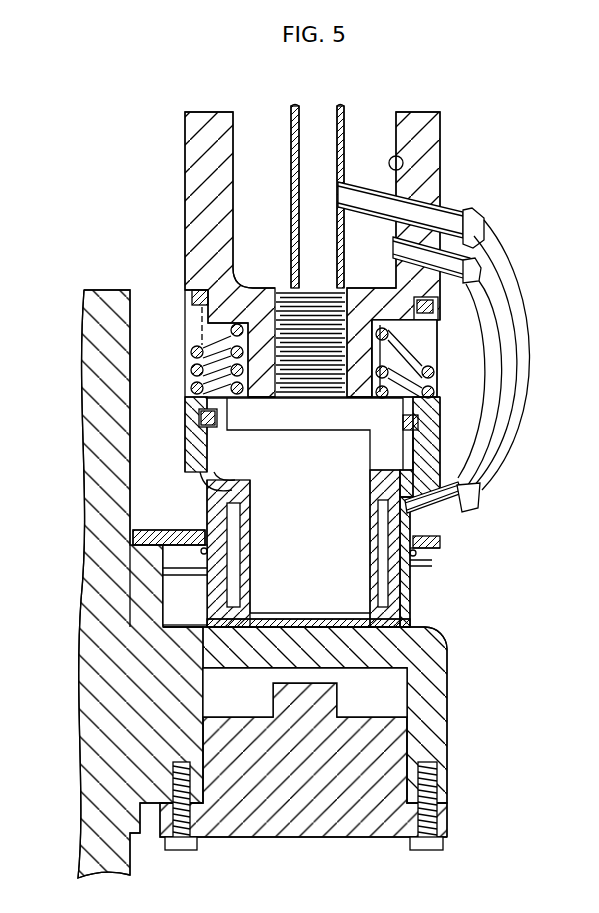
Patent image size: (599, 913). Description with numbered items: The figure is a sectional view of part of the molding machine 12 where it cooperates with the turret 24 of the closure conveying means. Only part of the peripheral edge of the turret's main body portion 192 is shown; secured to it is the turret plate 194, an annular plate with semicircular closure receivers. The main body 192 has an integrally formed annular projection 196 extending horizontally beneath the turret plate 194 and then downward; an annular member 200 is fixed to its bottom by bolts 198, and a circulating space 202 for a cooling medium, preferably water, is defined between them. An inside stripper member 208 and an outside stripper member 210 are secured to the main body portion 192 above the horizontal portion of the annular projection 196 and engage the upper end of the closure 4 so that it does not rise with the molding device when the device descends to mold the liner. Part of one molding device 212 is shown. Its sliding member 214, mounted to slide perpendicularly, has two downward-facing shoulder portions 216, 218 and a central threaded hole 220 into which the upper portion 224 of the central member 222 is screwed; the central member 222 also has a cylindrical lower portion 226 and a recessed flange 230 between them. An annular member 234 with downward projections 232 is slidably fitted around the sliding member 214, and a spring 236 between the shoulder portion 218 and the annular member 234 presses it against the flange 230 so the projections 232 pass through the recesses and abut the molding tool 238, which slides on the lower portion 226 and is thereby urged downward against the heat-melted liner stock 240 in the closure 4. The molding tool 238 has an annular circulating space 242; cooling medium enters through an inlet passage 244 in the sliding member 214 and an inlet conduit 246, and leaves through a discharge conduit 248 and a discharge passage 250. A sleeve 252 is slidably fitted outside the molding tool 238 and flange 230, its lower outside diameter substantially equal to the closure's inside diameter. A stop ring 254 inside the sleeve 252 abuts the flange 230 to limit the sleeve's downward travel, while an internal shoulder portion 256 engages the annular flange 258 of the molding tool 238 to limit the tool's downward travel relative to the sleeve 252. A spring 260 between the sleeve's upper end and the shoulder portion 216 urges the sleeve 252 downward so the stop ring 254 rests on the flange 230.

The molding machine 12 is at (528, 164).
The turret 24 is at (460, 728).
The main body portion 192 is at (85, 600).
The turret plate 194 is at (243, 578).
The annular projection 196 is at (448, 650).
The bolts 198 is at (182, 849).
The annular member 200 is at (367, 820).
The circulating space 202 is at (357, 703).
The inside stripper member 208 is at (130, 538).
The outside stripper member 210 is at (440, 537).
The molding device 212 is at (182, 200).
The sliding member 214 is at (440, 128).
The shoulder portion 216 is at (197, 296).
The shoulder portion 218 is at (190, 352).
The central threaded hole 220 is at (415, 322).
The central member 222 is at (482, 494).
The upper portion 224 is at (290, 296).
The lower portion 226 is at (415, 563).
The flange 230 is at (388, 442).
The projections 232 is at (413, 462).
The annular member 234 is at (430, 386).
The spring 236 is at (405, 340).
The molding tool 238 is at (410, 615).
The liner stock 240 is at (370, 620).
The circulating space 242 is at (417, 553).
The inlet passage 244 is at (395, 168).
The inlet conduit 246 is at (522, 406).
The discharge conduit 248 is at (488, 236).
The discharge passage 250 is at (300, 128).
The sleeve 252 is at (192, 445).
The stop ring 254 is at (205, 412).
The shoulder portion 256 is at (222, 483).
The annular flange 258 is at (212, 476).
The spring 260 is at (200, 322).
The container closure 4 is at (421, 589).